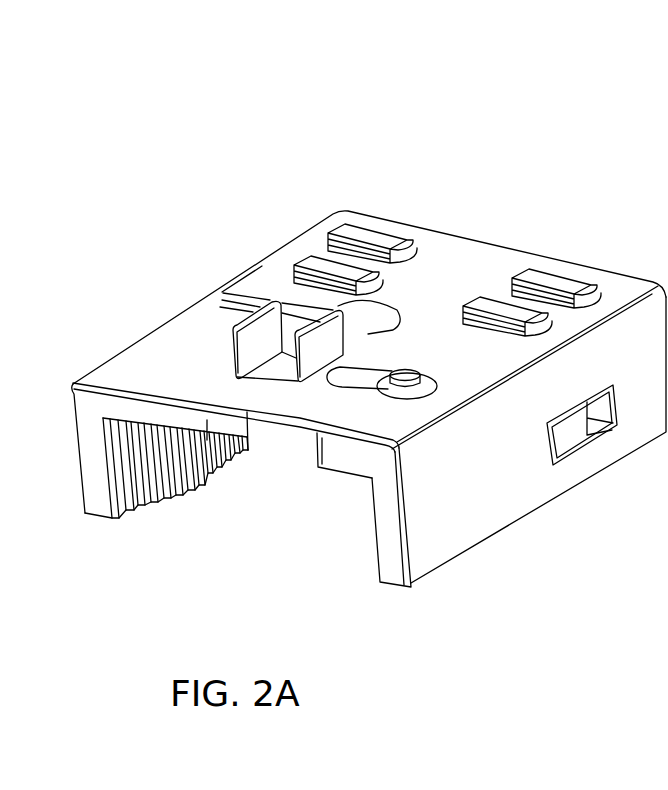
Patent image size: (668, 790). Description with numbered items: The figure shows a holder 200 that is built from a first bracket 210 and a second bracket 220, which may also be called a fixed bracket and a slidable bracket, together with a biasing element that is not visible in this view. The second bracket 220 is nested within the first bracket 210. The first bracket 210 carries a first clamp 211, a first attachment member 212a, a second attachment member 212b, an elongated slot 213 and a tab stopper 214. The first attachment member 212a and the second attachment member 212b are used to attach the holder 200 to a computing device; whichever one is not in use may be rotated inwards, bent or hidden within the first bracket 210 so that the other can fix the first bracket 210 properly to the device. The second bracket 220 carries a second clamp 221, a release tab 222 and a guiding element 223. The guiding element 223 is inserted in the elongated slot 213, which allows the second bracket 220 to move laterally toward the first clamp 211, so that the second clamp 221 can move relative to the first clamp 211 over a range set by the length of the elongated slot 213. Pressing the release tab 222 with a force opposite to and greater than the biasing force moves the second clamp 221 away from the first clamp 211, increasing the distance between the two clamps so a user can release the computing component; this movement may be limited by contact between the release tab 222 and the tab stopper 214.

The holder 200 is at (378, 184).
The first bracket 210 is at (300, 237).
The first clamp 211 is at (175, 480).
The first attachment member 212a is at (373, 237).
The second attachment member 212b is at (510, 313).
The elongated slot 213 is at (358, 380).
The tab stopper 214 is at (312, 341).
The second bracket 220 is at (373, 449).
The second clamp 221 is at (387, 540).
The release tab 222 is at (252, 342).
The guiding element 223 is at (437, 385).